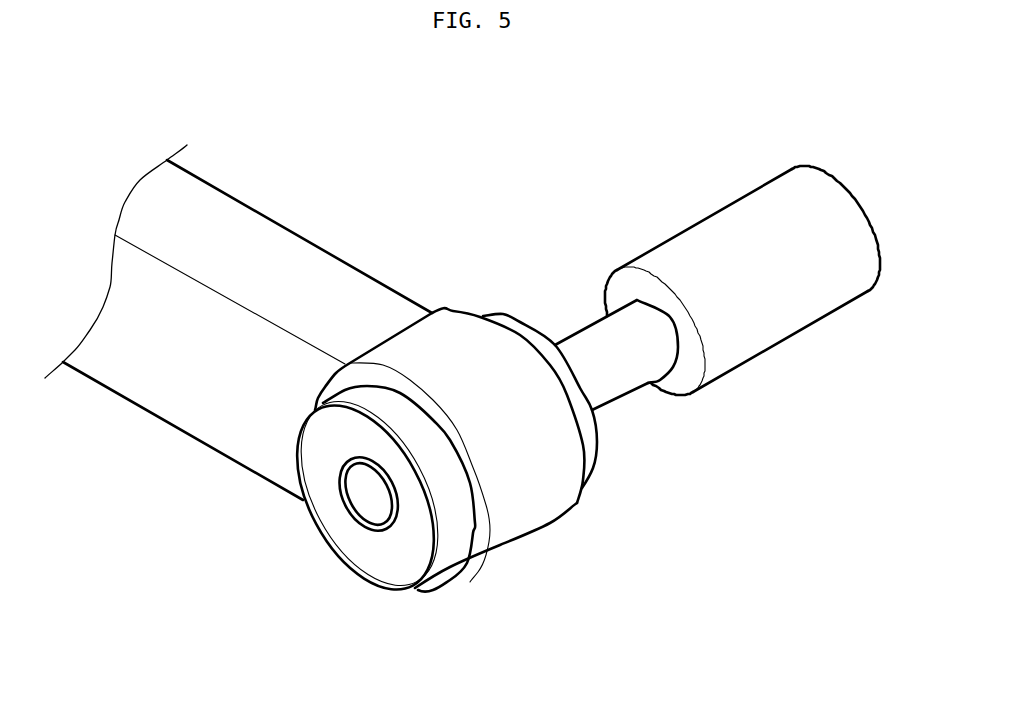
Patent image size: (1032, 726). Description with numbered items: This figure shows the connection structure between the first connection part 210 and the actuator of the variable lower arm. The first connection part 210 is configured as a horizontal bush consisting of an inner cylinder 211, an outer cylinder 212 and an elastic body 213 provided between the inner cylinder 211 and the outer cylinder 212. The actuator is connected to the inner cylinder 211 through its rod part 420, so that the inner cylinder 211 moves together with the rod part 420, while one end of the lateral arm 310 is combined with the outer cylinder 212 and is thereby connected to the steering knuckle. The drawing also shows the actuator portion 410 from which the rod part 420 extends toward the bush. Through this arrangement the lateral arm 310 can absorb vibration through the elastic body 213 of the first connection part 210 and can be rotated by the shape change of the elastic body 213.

The first connection part 210 is at (322, 560).
The inner cylinder 211 is at (368, 530).
The outer cylinder 212 is at (399, 588).
The elastic body 213 is at (328, 513).
The lateral arm 310 is at (273, 238).
The cylinder 410 is at (807, 303).
The rod part 420 is at (615, 378).